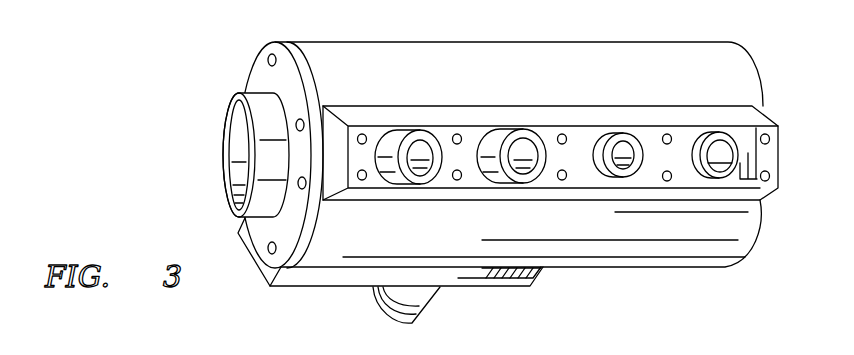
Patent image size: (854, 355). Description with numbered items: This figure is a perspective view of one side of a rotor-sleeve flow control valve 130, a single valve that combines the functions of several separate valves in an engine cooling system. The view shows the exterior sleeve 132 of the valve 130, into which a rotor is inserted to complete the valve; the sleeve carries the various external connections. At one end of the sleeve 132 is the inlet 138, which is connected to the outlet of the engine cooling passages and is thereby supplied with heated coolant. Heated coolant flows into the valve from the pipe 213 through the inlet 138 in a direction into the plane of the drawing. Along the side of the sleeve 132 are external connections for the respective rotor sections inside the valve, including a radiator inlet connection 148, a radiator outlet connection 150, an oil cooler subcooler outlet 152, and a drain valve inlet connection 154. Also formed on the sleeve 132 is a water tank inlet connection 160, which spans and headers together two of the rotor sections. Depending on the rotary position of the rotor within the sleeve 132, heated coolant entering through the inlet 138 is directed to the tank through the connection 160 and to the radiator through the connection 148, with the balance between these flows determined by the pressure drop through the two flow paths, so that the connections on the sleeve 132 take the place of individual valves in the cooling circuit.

The rotor-sleeve flow control valve 130 is at (555, 14).
The exterior sleeve 132 is at (400, 42).
The inlet 138 is at (227, 103).
The radiator inlet connection 148 is at (420, 150).
The radiator outlet connection 150 is at (523, 147).
The oil cooler subcooler outlet 152 is at (627, 147).
The drain valve inlet connection 154 is at (720, 160).
The water tank inlet connection 160 is at (377, 306).
The pipe 213 is at (200, 166).